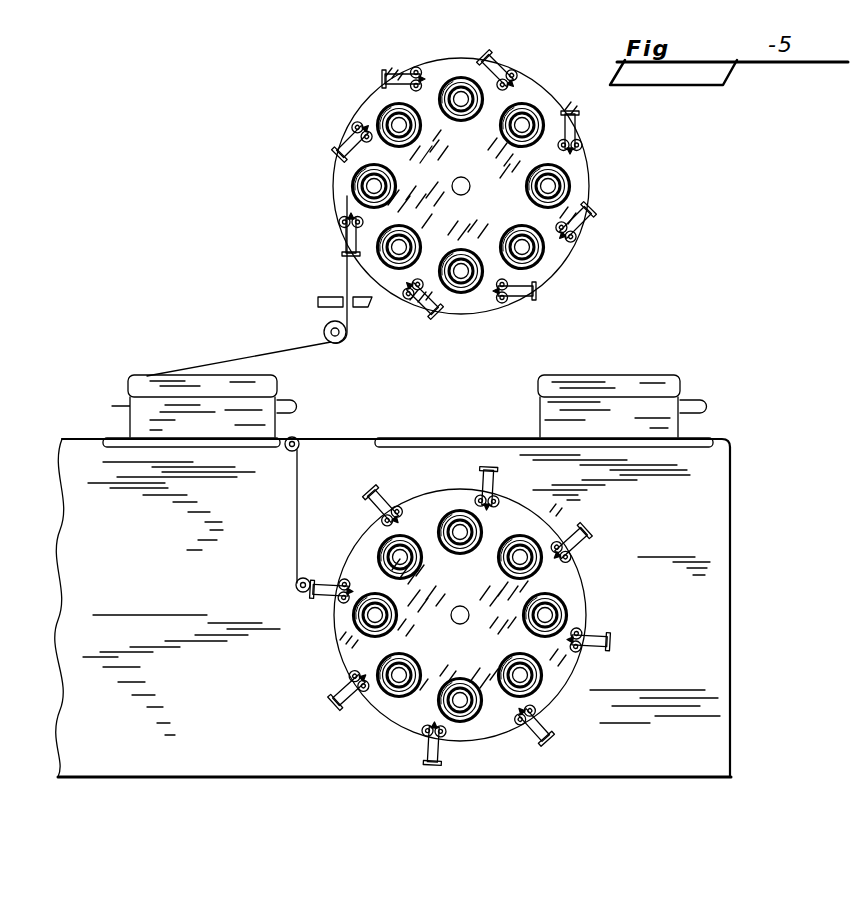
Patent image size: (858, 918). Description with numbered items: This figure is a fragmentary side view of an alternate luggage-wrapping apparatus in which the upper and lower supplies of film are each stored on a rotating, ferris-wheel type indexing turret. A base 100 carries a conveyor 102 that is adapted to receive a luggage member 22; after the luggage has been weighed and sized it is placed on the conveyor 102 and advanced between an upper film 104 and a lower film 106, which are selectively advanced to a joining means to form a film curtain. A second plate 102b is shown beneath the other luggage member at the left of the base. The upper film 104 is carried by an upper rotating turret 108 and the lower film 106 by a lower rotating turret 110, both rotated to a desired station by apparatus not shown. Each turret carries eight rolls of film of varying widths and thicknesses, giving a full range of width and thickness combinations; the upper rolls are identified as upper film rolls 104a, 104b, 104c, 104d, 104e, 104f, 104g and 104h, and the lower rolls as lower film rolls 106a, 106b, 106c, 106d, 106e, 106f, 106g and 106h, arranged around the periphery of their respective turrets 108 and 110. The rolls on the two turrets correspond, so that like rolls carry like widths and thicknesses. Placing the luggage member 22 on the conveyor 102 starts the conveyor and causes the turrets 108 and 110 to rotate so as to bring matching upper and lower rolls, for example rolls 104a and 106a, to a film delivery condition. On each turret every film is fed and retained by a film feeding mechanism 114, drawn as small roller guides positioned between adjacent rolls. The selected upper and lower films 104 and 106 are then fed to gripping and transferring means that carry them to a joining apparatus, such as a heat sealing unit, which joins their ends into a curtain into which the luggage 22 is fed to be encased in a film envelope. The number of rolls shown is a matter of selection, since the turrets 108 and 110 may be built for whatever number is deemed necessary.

The luggage member 22 is at (645, 382).
The base 100 is at (722, 540).
The conveyor 102 is at (730, 446).
The support plate 102b is at (276, 504).
The upper film 104 is at (306, 349).
The upper film roll 104a is at (351, 188).
The upper film roll 104b is at (385, 115).
The upper film roll 104c is at (484, 38).
The upper film roll 104d is at (586, 58).
The upper film roll 104e is at (668, 171).
The upper film roll 104f is at (633, 280).
The upper film roll 104g is at (561, 335).
The upper film roll 104h is at (398, 265).
The lower film 106 is at (303, 478).
The lower film roll 106a is at (338, 625).
The lower film roll 106b is at (376, 529).
The lower film roll 106c is at (469, 487).
The lower film roll 106d is at (545, 547).
The lower film roll 106e is at (680, 624).
The lower film roll 106f is at (542, 681).
The lower film roll 106g is at (551, 769).
The lower film roll 106h is at (390, 697).
The upper rotating turret 108 is at (594, 198).
The lower rotating turret 110 is at (580, 585).
The film feeding mechanism 114 is at (313, 607).